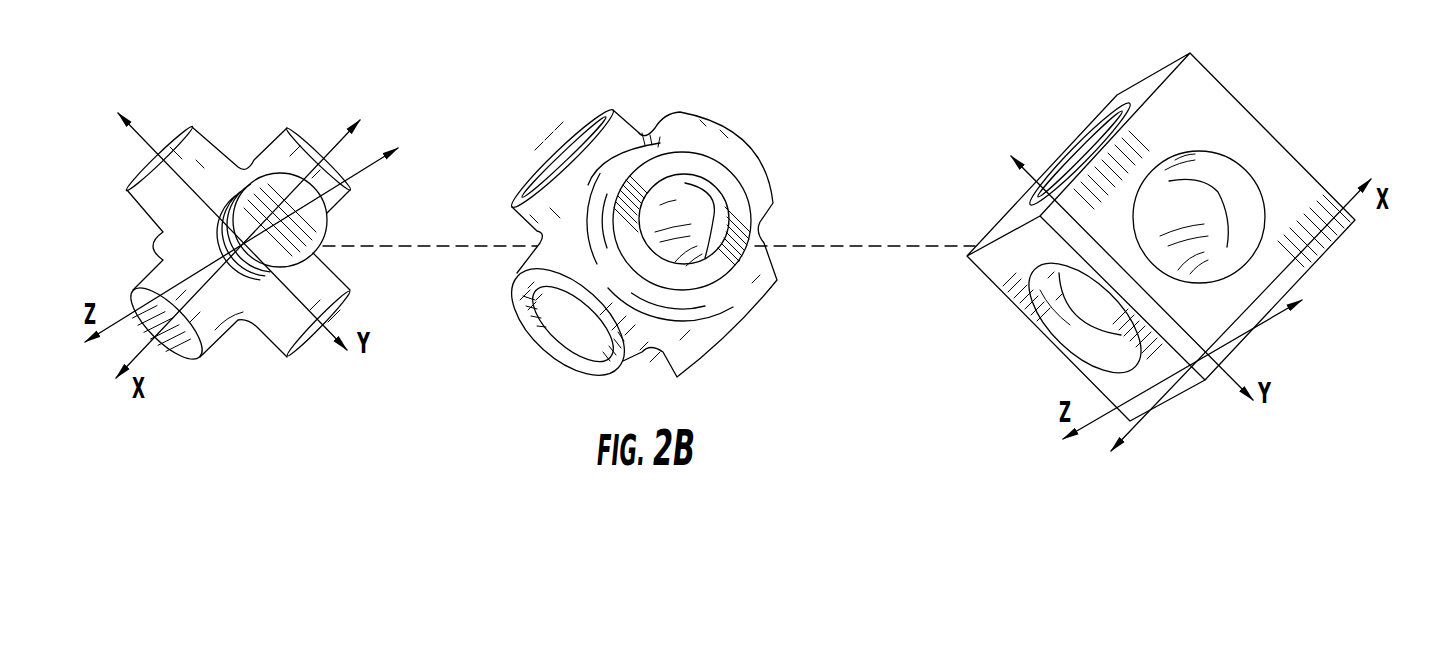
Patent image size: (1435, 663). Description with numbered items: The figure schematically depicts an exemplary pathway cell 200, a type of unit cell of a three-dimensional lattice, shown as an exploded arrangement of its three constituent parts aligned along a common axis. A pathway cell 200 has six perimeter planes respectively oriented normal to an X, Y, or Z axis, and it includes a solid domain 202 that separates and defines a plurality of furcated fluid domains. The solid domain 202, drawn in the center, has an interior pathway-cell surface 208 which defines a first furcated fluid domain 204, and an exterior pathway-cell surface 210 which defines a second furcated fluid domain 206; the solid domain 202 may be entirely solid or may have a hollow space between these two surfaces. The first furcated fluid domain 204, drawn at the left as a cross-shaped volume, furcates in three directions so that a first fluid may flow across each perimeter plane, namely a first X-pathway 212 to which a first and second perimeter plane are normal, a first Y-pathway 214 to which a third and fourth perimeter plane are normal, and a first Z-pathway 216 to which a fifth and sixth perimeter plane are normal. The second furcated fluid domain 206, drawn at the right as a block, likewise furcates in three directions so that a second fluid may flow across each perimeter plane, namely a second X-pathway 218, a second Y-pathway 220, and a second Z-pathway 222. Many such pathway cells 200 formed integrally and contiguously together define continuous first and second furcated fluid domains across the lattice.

The pathway cell 200 is at (652, 216).
The solid domain 202 is at (767, 178).
The first furcated fluid domain 204 is at (211, 247).
The second furcated fluid domain 206 is at (1208, 134).
The interior pathway-cell surface 208 is at (667, 223).
The exterior pathway-cell surface 210 is at (672, 140).
The first X-pathway 212 is at (332, 147).
The first Y-pathway 214 is at (145, 140).
The first Z-pathway 216 is at (358, 174).
The second X-pathway 218 is at (1353, 190).
The second Y-pathway 220 is at (1229, 378).
The second Z-pathway 222 is at (1088, 429).